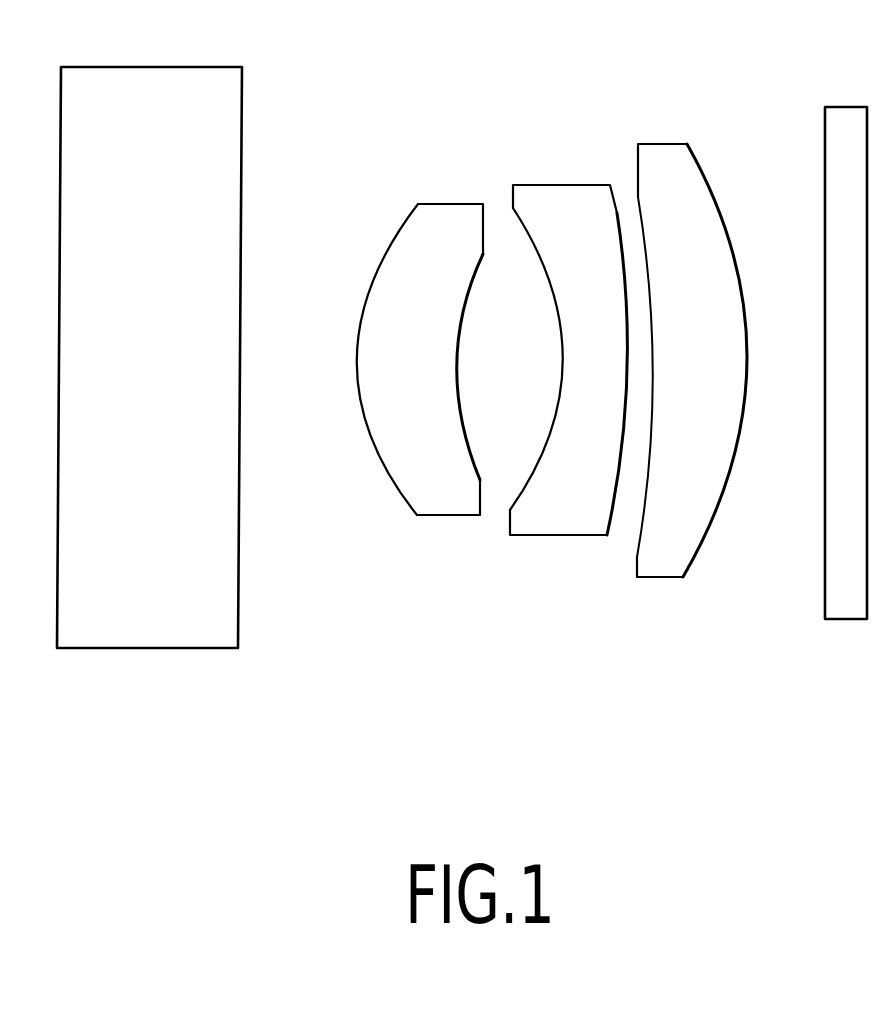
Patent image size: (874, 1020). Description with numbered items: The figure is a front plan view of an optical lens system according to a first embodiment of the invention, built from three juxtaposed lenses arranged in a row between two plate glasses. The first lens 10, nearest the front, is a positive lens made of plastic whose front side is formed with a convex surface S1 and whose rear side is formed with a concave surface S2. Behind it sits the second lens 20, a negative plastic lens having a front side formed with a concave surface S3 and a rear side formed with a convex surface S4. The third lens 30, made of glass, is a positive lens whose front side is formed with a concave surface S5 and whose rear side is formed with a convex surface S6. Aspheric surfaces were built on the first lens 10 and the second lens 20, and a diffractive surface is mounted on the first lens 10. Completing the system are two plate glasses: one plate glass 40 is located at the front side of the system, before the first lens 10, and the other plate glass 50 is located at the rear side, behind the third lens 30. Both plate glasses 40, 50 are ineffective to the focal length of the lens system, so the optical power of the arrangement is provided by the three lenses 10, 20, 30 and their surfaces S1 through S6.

The first lens 10 is at (410, 359).
The second lens 20 is at (579, 336).
The third lens 30 is at (700, 355).
The plate glass 40 is at (222, 550).
The plate glass 50 is at (832, 570).
The convex surface S1 is at (393, 237).
The concave surface S2 is at (478, 262).
The concave surface S3 is at (530, 237).
The convex surface S4 is at (619, 215).
The concave surface S5 is at (646, 197).
The convex surface S6 is at (703, 170).